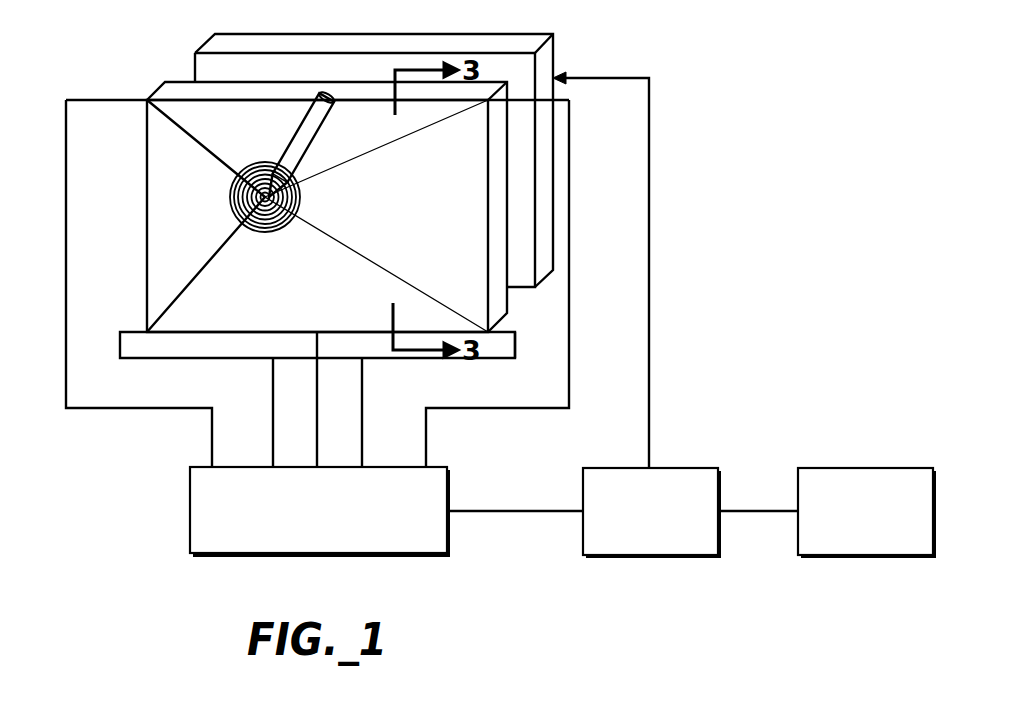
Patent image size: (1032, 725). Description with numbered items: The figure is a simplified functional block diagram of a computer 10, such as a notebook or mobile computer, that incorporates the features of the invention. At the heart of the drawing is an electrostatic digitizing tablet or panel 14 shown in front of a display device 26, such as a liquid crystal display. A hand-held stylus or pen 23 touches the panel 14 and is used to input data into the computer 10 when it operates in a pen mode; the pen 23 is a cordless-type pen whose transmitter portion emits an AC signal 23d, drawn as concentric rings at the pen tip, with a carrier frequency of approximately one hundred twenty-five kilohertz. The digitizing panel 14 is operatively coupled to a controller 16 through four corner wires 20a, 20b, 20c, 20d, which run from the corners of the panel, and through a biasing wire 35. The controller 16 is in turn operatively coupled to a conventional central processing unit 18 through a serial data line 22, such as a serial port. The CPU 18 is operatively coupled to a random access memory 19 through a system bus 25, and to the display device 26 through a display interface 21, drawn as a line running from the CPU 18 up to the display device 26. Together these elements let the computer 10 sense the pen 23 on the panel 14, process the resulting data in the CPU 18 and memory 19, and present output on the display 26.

The computer 10 is at (793, 157).
The electrostatic digitizing tablet or panel 14 is at (301, 287).
The controller 16 is at (190, 517).
The central processing unit 18 is at (690, 468).
The random access memory 19 is at (862, 468).
The corner wire 20a is at (120, 345).
The corner wire 20b is at (128, 100).
The corner wire 20c is at (569, 152).
The corner wire 20d is at (515, 343).
The display interface 21 is at (649, 263).
The serial data line 22 is at (531, 511).
The stylus or pen 23 is at (307, 123).
The AC signal 23d is at (243, 180).
The system bus 25 is at (755, 511).
The display device 26 is at (460, 34).
The biasing wire 35 is at (317, 415).